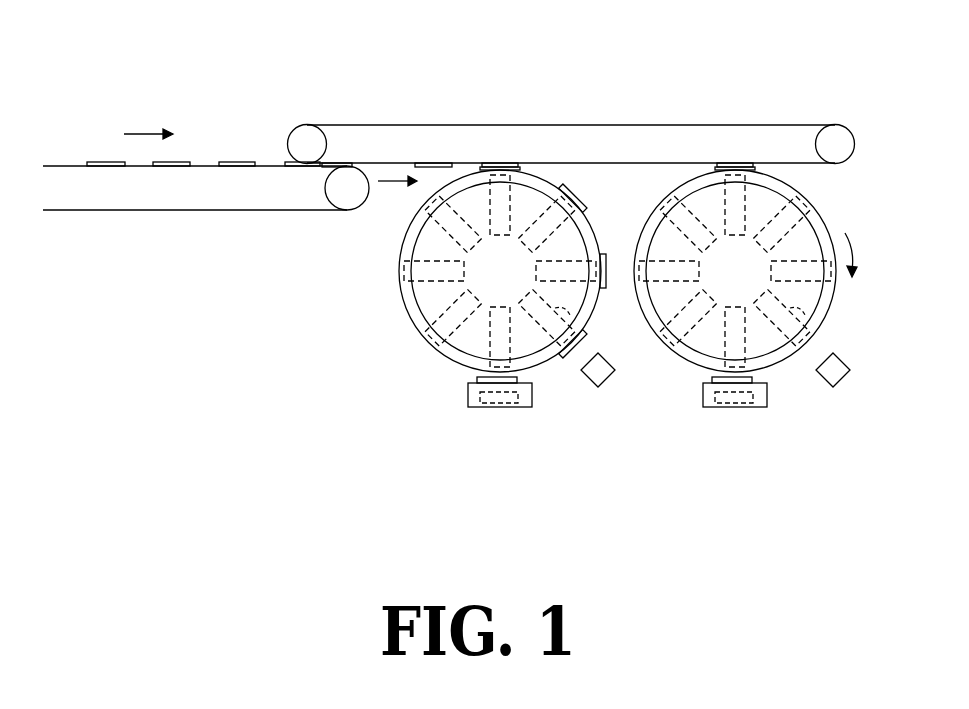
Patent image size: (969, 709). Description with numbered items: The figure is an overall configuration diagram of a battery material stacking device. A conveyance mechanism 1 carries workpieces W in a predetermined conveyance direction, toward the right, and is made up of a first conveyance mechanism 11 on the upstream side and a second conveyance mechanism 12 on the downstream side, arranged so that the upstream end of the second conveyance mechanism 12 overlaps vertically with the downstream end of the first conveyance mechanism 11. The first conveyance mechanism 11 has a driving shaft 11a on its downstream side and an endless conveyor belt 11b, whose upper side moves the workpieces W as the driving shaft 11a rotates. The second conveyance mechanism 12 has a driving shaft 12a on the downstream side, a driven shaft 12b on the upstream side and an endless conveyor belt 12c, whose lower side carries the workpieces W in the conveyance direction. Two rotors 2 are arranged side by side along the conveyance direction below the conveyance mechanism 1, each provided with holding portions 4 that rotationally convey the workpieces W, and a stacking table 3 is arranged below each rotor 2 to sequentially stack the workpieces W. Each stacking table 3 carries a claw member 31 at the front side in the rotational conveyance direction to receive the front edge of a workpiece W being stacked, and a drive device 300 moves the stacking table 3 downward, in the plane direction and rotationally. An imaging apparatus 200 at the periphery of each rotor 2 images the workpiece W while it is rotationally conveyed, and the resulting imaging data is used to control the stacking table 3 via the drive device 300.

The conveyance mechanism 1 is at (519, 94).
The rotor 2 is at (403, 308).
The stacking table 3 is at (535, 407).
The holding portion 4 is at (586, 321).
The first conveyance mechanism 11 is at (199, 158).
The driving shaft 11a is at (325, 196).
The conveyor belt 11b is at (133, 165).
The second conveyance mechanism 12 is at (602, 122).
The driving shaft 12a is at (831, 127).
The driven shaft 12b is at (303, 126).
The conveyor belt 12c is at (666, 165).
The claw member 31 is at (477, 378).
The imaging apparatus 200 is at (597, 387).
The drive device 300 is at (468, 412).
The workpiece W is at (97, 163).